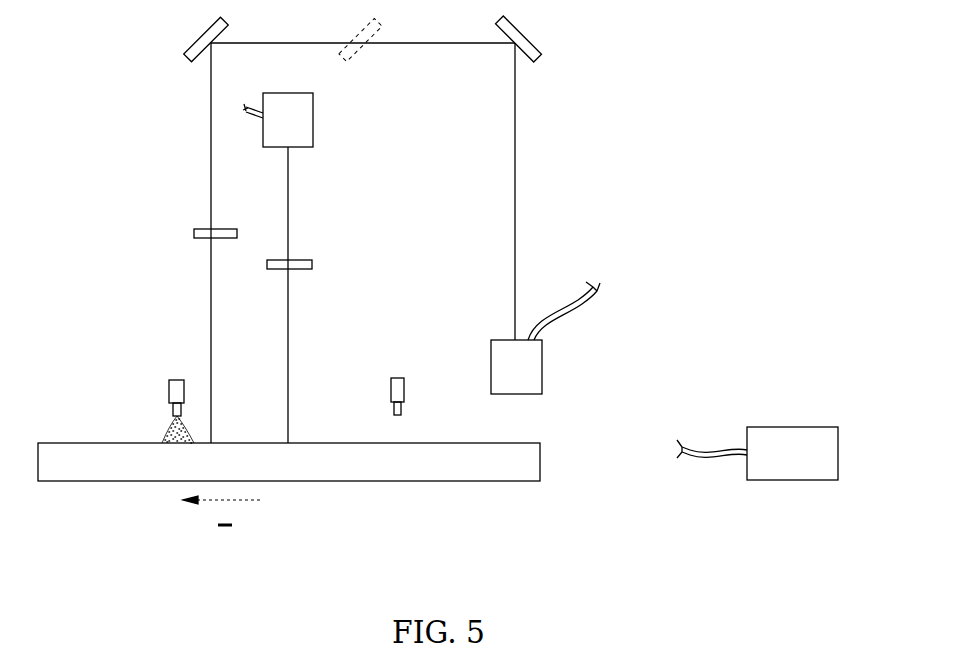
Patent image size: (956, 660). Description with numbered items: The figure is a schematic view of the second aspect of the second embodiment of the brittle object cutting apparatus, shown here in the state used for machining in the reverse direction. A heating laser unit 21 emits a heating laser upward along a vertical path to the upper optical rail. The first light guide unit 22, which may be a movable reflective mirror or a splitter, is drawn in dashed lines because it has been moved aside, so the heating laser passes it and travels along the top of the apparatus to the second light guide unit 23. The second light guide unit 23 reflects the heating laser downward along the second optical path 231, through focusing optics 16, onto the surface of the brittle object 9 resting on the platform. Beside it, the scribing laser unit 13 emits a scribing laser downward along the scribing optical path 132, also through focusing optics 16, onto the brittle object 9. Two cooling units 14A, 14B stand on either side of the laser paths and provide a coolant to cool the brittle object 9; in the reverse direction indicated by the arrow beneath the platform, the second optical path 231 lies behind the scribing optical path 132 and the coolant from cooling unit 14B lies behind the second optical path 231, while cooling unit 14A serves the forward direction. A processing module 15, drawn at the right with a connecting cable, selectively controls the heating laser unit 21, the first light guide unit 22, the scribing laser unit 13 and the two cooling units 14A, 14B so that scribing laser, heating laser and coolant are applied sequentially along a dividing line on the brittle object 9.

The second light guide unit 23 is at (192, 60).
The first light guide unit 22 is at (357, 50).
The second optical path 231 is at (211, 143).
The scribing laser unit 13 is at (276, 143).
The scribing optical path 132 is at (290, 220).
The focusing optics 16 is at (211, 240).
The cooling unit 14B is at (173, 380).
The cooling unit 14A is at (396, 378).
The heating laser unit 21 is at (536, 366).
The brittle object 9 is at (517, 470).
The processing module 15 is at (795, 470).